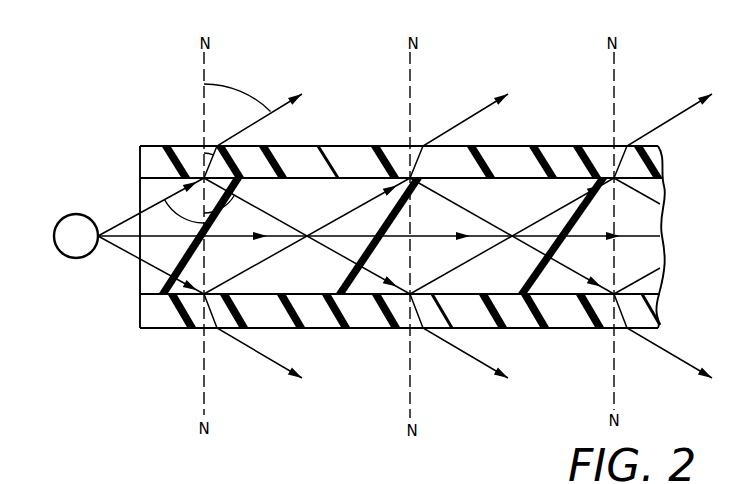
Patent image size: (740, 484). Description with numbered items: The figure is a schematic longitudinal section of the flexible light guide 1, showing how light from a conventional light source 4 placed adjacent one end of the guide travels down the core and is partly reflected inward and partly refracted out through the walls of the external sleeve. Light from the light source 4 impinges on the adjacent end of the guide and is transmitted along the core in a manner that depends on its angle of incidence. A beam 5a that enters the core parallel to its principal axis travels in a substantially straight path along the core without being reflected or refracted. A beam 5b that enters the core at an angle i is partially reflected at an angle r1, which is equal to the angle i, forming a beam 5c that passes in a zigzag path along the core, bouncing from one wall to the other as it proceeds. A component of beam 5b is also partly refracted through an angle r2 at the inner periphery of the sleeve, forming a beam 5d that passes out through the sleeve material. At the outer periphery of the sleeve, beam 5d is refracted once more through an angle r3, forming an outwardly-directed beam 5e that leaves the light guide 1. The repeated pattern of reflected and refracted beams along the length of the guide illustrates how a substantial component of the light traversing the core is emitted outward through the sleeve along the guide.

The flexible light guide 1 is at (435, 90).
The light source 4 is at (72, 258).
The beam parallel to principal axis 5a is at (420, 230).
The beam entering at angle i 5b is at (133, 215).
The reflected zigzag beam 5c is at (307, 178).
The refracted beam in sleeve 5d is at (214, 166).
The outwardly-directed beam 5e is at (268, 110).
The angle of reflection r1 is at (224, 203).
The angle of refraction at inner periphery r2 is at (207, 150).
The angle of refraction at outer periphery r3 is at (228, 84).
The angle of incidence i is at (180, 214).